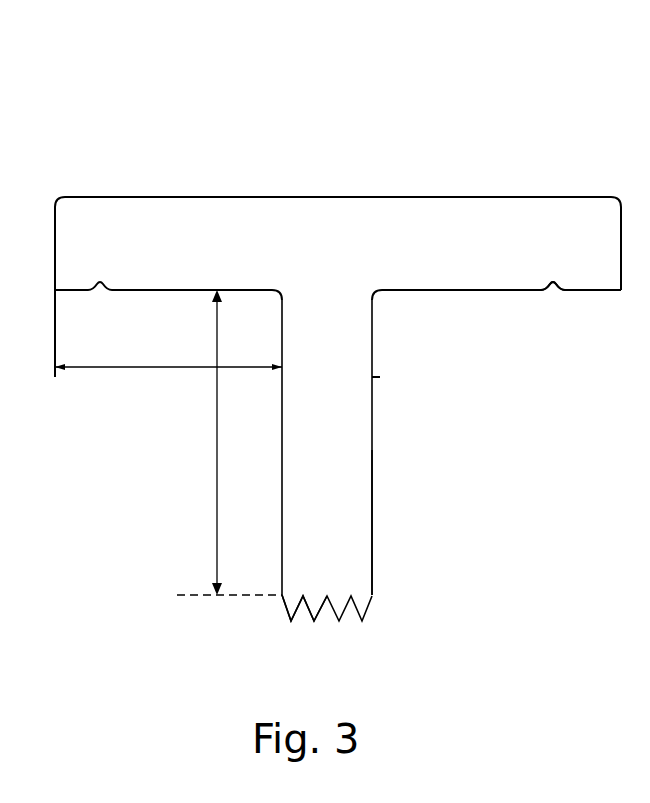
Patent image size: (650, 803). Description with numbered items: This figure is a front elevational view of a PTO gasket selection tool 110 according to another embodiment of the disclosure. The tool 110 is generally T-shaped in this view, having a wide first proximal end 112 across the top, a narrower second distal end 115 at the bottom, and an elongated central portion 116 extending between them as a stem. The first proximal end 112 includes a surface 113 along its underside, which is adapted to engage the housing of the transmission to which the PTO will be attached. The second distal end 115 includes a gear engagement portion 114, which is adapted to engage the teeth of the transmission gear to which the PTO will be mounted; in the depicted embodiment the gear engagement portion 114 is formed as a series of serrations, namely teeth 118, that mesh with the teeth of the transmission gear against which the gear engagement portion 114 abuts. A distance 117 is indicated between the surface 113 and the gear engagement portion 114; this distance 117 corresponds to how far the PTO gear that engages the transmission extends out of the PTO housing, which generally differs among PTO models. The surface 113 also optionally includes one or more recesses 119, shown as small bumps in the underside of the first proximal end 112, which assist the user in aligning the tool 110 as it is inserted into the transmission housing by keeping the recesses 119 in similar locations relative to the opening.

The PTO gasket selection tool 110 is at (510, 101).
The first proximal end 112 is at (163, 203).
The surface 113 is at (415, 290).
The gear engagement portion 114 is at (354, 640).
The second distal end 115 is at (386, 576).
The elongated central portion 116 is at (390, 404).
The distance 117 is at (214, 440).
The teeth 118 is at (315, 622).
The recesses 119 is at (553, 281).